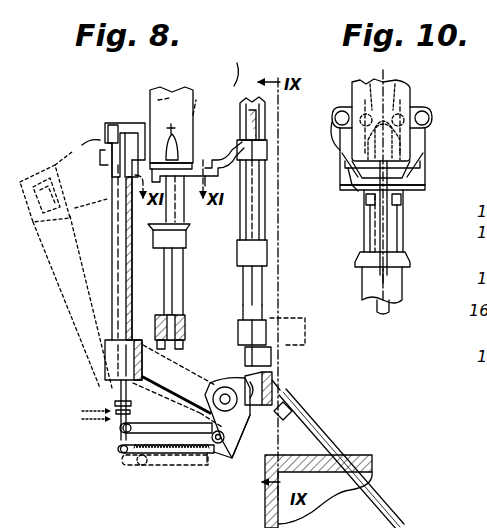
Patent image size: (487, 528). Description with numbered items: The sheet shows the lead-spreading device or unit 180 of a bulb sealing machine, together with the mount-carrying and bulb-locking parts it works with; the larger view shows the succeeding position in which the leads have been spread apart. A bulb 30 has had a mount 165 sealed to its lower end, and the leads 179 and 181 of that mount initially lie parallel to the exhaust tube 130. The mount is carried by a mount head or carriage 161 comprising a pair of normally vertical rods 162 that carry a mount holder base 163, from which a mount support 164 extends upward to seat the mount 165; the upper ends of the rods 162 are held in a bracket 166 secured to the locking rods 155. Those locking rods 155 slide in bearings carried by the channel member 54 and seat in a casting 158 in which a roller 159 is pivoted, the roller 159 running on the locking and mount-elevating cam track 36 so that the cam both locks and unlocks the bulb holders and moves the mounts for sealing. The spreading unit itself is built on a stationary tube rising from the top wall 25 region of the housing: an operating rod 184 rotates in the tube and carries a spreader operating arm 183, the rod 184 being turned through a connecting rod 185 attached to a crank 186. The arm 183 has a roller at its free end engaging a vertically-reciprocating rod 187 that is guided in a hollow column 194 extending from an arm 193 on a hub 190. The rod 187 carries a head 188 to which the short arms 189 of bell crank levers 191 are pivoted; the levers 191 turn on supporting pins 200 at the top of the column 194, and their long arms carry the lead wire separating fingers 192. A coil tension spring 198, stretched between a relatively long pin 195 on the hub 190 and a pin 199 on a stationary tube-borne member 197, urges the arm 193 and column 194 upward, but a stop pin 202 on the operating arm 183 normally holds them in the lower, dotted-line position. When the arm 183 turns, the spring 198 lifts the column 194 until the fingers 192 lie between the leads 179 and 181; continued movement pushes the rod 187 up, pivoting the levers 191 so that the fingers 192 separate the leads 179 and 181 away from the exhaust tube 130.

In FIG. 8, the top wall 25 is at (352, 456).
In FIG. 8, the bulb 30 is at (166, 94).
In FIG. 10, the bulb 30 is at (405, 86).
In FIG. 8, the locking and mount-elevating cam track 36 is at (273, 380).
In FIG. 8, the channel member 54 is at (245, 65).
In FIG. 8, the exhaust tube 130 is at (133, 222).
In FIG. 10, the exhaust tube 130 is at (370, 242).
In FIG. 8, the locking rods 155 is at (255, 285).
In FIG. 8, the casting 158 is at (260, 330).
In FIG. 8, the roller 159 is at (280, 335).
In FIG. 8, the mount head or carriage 161 is at (232, 155).
In FIG. 8, the rods 162 is at (184, 290).
In FIG. 8, the mount holder base 163 is at (186, 328).
In FIG. 8, the mount support 164 is at (184, 242).
In FIG. 10, the mount support 164 is at (404, 264).
In FIG. 8, the mount 165 is at (197, 112).
In FIG. 10, the mount 165 is at (420, 132).
In FIG. 8, the bracket 166 is at (267, 150).
In FIG. 10, the lead 179 is at (357, 183).
In FIG. 8, the lead-spreading device or unit 180 is at (98, 366).
In FIG. 10, the lead-spreading device or unit 180 is at (340, 99).
In FIG. 8, the lead 181 is at (185, 215).
In FIG. 10, the lead 181 is at (420, 200).
In FIG. 8, the spreader operating arm 183 is at (125, 428).
In FIG. 8, the operating rod 184 is at (292, 406).
In FIG. 8, the connecting rod 185 is at (455, 520).
In FIG. 8, the crank 186 is at (271, 353).
In FIG. 8, the vertically-reciprocating rod 187 is at (112, 397).
In FIG. 10, the vertically-reciprocating rod 187 is at (390, 308).
In FIG. 8, the head 188 is at (116, 160).
In FIG. 10, the head 188 is at (428, 170).
In FIG. 10, the short arms 189 is at (432, 118).
In FIG. 8, the hub 190 is at (180, 385).
In FIG. 8, the bell crank levers 191 is at (140, 108).
In FIG. 10, the bell crank levers 191 is at (410, 100).
In FIG. 8, the lead wire separating fingers 192 is at (145, 121).
In FIG. 10, the lead wire separating fingers 192 is at (360, 193).
In FIG. 8, the arm 193 is at (178, 360).
In FIG. 8, the hollow column 194 is at (110, 283).
In FIG. 10, the hollow column 194 is at (395, 238).
In FIG. 8, the pin 195 is at (238, 436).
In FIG. 8, the stationary tube-borne member 197 is at (135, 455).
In FIG. 8, the coil tension spring 198 is at (165, 465).
In FIG. 8, the pin 199 is at (118, 452).
In FIG. 10, the supporting pins 200 is at (372, 90).
In FIG. 8, the stop pin 202 is at (208, 462).